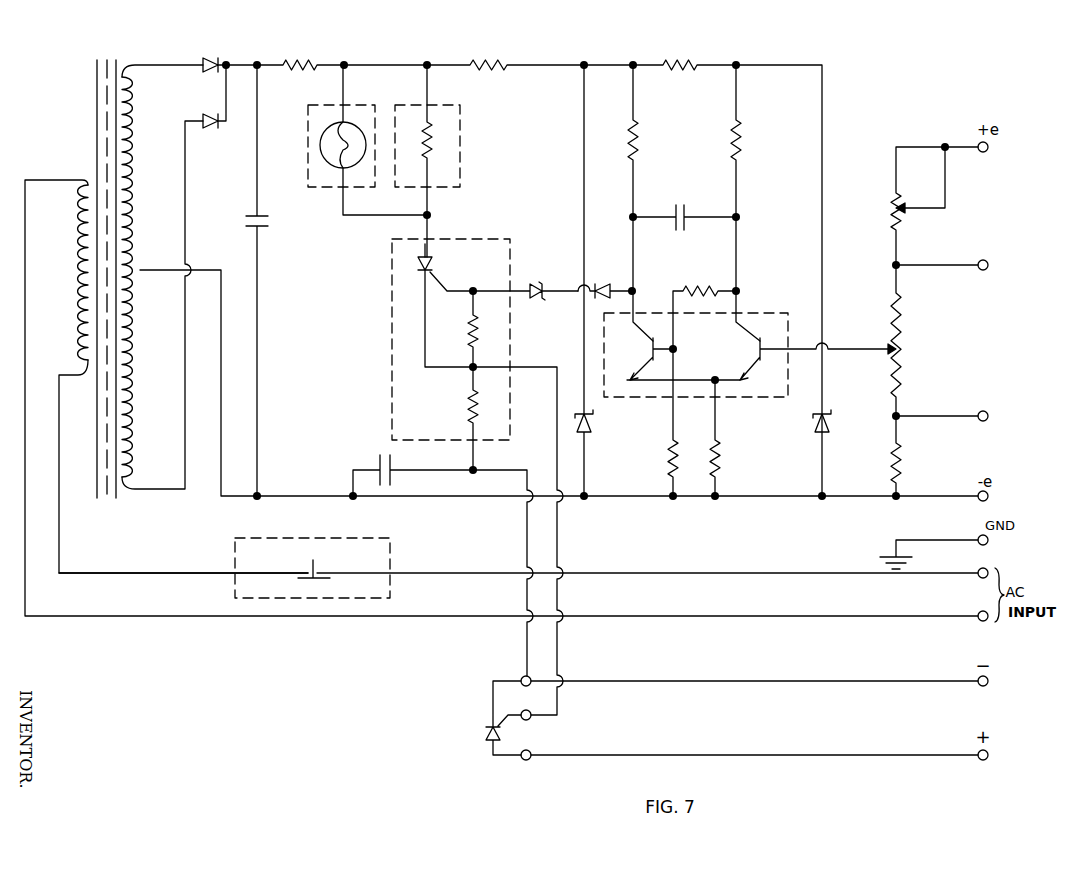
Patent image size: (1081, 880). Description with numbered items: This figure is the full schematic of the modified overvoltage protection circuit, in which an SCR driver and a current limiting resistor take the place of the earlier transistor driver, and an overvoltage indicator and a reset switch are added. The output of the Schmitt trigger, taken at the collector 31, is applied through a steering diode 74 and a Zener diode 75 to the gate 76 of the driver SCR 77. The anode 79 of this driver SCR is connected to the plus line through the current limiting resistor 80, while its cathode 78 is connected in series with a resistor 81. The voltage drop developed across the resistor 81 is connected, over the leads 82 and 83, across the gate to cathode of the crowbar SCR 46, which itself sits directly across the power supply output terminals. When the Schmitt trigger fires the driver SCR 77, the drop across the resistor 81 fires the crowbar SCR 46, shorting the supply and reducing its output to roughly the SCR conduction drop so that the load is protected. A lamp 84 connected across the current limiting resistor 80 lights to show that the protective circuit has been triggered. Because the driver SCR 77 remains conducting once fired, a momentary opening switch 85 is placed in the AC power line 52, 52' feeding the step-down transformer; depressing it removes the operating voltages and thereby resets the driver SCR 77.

The collector 31 is at (637, 325).
The crowbar SCR 46 is at (492, 728).
The power line 52 is at (647, 589).
The power line 52' is at (183, 588).
The steering diode 74 is at (598, 281).
The Zener diode 75 is at (540, 282).
The gate 76 is at (440, 285).
The driver SCR 77 is at (418, 272).
The cathode 78 is at (421, 275).
The anode 79 is at (431, 265).
The current limiting resistor 80 is at (430, 150).
The resistor 81 is at (468, 404).
The lead 82 is at (527, 524).
The lead 83 is at (557, 524).
The lamp 84 is at (335, 168).
The momentary opening switch 85 is at (318, 565).